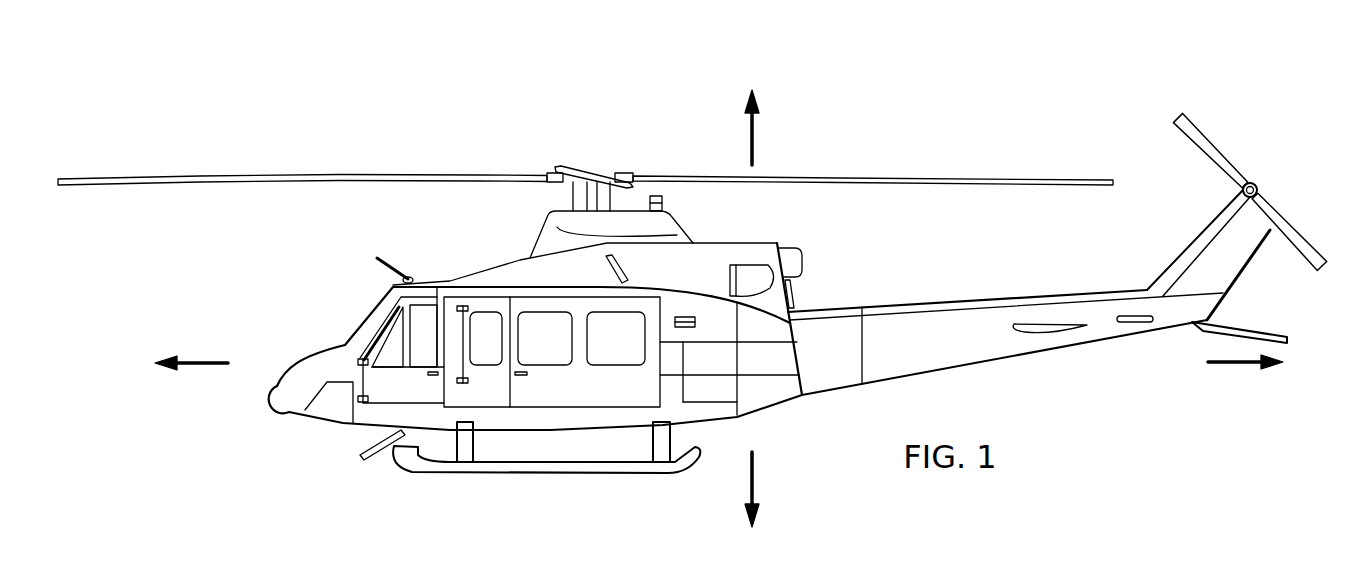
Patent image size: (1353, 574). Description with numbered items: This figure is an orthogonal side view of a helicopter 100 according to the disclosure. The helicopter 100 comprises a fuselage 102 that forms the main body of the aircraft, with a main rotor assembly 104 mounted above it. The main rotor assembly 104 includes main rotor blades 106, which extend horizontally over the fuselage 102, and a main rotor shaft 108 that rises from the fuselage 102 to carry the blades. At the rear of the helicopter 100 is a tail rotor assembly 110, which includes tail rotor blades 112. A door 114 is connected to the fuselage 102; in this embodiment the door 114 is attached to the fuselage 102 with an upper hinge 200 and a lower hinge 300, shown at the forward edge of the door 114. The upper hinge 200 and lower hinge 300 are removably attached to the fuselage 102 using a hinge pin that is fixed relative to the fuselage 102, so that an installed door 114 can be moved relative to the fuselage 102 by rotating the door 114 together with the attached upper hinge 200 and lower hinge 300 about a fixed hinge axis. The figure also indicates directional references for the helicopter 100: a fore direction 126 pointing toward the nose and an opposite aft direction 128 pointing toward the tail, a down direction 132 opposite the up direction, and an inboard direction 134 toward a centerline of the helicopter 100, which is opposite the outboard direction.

The helicopter 100 is at (446, 84).
The fuselage 102 is at (543, 432).
The main rotor assembly 104 is at (610, 156).
The main rotor blades 106 is at (305, 176).
The main rotor shaft 108 is at (590, 194).
The tail rotor assembly 110 is at (1266, 170).
The tail rotor blades 112 is at (1210, 134).
The door 114 is at (426, 392).
The fore direction 126 is at (200, 364).
The aft direction 128 is at (1235, 363).
The down direction 132 is at (755, 142).
The inboard direction 134 is at (755, 477).
The upper hinge 200 is at (343, 362).
The lower hinge 300 is at (343, 400).